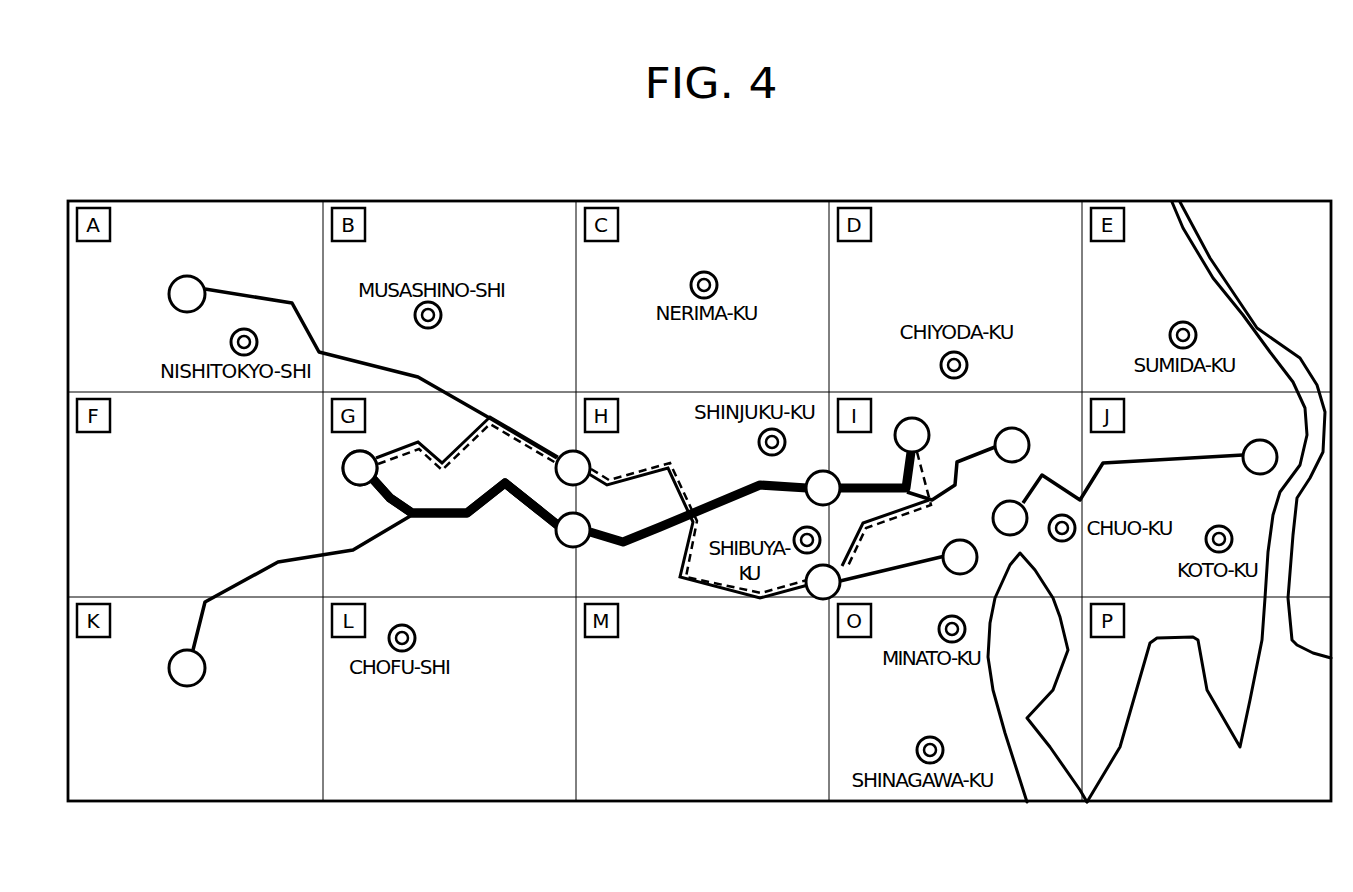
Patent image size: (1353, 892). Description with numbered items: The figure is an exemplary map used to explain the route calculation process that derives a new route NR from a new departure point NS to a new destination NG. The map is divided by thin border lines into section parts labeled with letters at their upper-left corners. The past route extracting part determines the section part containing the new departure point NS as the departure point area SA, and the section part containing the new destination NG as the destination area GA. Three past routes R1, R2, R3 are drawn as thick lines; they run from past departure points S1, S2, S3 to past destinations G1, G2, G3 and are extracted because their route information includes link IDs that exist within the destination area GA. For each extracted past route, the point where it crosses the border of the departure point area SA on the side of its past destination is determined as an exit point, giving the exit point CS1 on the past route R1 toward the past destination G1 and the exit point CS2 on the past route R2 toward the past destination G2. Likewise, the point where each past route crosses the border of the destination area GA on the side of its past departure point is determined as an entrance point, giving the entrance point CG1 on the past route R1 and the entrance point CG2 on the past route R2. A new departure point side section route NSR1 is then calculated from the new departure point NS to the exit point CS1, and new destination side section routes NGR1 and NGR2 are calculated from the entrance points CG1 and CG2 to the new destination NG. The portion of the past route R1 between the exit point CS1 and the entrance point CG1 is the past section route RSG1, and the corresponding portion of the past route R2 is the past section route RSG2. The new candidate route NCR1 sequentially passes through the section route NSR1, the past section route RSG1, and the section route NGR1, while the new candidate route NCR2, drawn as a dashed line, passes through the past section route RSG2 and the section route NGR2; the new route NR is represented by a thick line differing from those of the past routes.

The past departure point S1 is at (205, 677).
The past departure point S2 is at (196, 275).
The past departure point S3 is at (1243, 470).
The past route R1 is at (267, 562).
The past route R2 is at (276, 297).
The past route R3 is at (1118, 464).
The departure point area SA is at (322, 450).
The new departure point NS is at (353, 488).
The new route NR is at (387, 507).
The new candidate route NCR1 is at (472, 533).
The new candidate route NCR2 is at (538, 442).
The new departure point side section route NSR1 is at (517, 508).
The exit point CS1 is at (563, 543).
The exit point CS2 is at (593, 458).
The past section route RSG1 is at (647, 545).
The past section route RSG2 is at (665, 463).
The entrance point CG1 is at (807, 478).
The entrance point CG2 is at (815, 602).
The new destination NG is at (930, 425).
The new destination side section route NGR1 is at (880, 480).
The new destination side section route NGR2 is at (917, 508).
The past destination G1 is at (1025, 425).
The past destination G2 is at (947, 562).
The past destination G3 is at (993, 518).
The destination area GA is at (1054, 392).